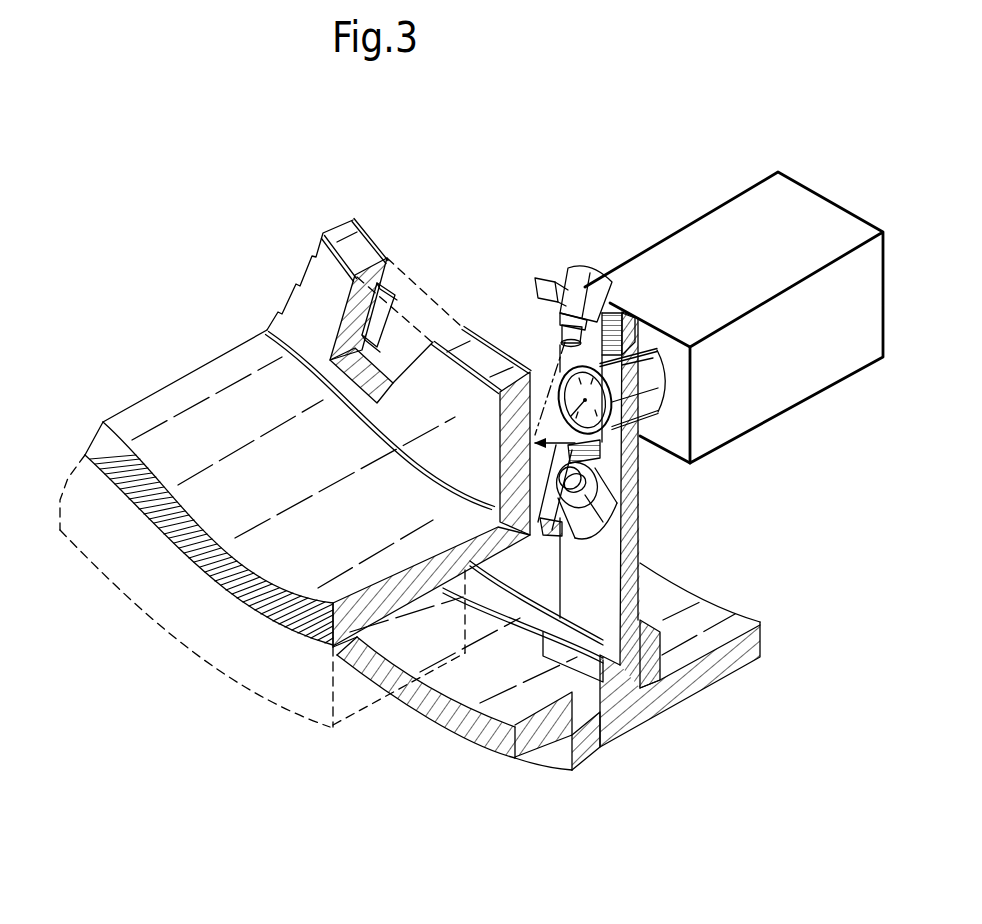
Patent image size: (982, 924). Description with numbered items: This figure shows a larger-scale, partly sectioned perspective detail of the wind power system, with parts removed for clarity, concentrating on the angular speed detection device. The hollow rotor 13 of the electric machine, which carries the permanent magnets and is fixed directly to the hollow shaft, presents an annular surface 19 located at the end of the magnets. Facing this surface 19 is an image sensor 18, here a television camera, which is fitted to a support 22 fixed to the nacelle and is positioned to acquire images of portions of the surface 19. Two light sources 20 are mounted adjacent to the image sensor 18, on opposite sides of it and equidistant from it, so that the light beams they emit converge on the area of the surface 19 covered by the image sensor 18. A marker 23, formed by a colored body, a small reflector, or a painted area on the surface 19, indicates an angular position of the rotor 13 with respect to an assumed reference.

The rotor 13 is at (203, 360).
The image sensor 18 is at (785, 360).
The surface 19 is at (620, 434).
The light sources 20 is at (593, 278).
The support 22 is at (640, 492).
The marker 23 is at (385, 288).